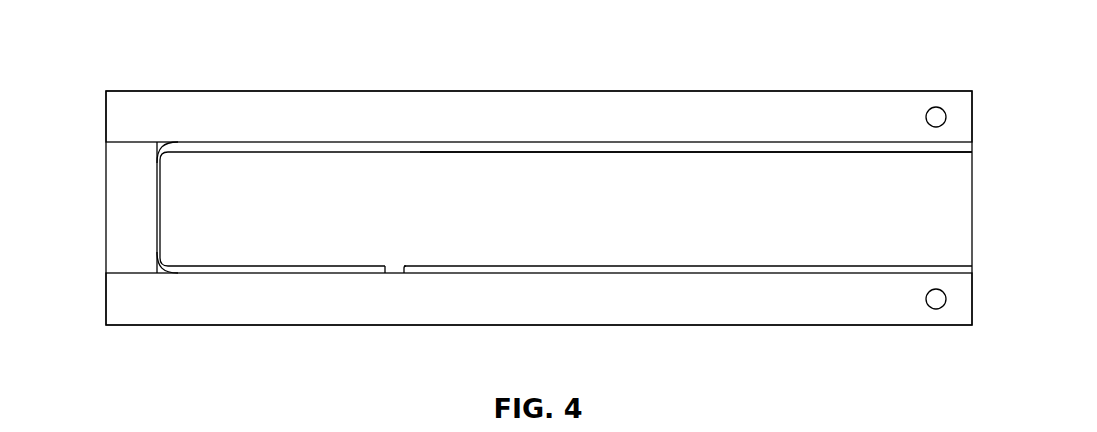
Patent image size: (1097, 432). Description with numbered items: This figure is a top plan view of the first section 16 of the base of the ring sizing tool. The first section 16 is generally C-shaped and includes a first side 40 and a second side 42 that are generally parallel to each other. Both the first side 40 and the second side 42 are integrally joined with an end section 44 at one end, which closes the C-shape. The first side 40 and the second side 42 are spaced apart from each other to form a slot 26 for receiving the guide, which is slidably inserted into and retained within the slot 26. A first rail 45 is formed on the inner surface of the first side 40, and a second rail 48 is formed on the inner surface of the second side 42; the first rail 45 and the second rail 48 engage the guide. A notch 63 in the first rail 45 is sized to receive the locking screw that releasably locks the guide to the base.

The first section 16 is at (753, 88).
The slot 26 is at (324, 170).
The first side 40 is at (322, 317).
The second side 42 is at (474, 107).
The end section 44 is at (137, 185).
The first rail 45 is at (645, 265).
The second rail 48 is at (543, 152).
The notch 63 is at (394, 264).